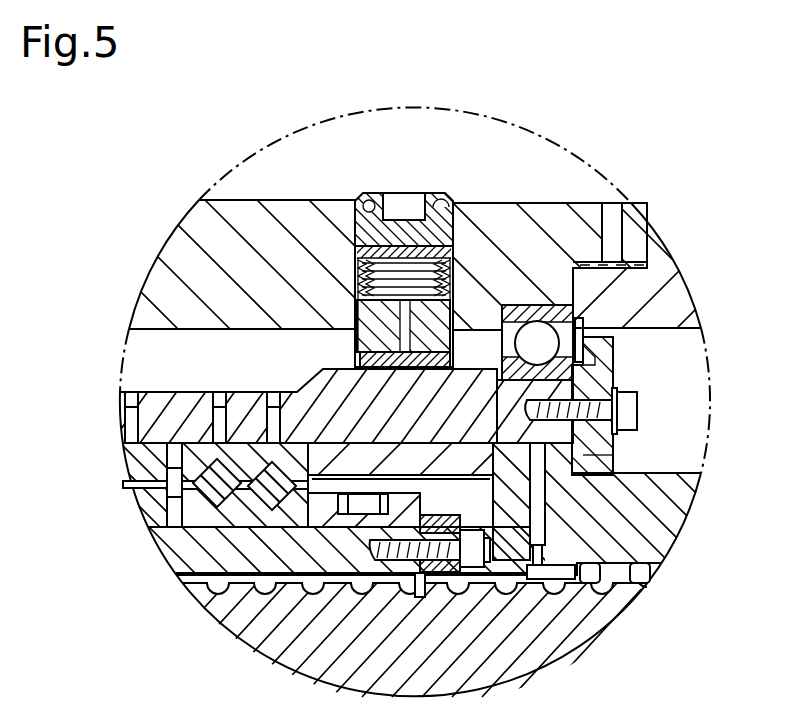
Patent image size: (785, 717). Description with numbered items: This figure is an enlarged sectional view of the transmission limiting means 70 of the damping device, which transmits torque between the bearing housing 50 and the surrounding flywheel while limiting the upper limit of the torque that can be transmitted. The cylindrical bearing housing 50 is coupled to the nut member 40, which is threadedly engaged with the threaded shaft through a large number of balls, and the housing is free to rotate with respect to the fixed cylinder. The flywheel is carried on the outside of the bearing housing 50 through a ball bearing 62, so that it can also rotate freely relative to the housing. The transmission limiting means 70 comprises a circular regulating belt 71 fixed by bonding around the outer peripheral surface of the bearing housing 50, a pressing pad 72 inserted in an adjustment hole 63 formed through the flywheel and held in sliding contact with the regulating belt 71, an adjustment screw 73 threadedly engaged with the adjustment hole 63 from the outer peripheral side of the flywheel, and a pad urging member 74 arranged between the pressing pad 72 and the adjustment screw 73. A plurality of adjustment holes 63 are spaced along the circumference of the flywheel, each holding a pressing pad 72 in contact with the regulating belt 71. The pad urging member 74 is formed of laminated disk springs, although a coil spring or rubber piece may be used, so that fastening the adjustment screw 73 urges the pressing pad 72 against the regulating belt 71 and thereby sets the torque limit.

The nut member 40 is at (683, 478).
The bearing housing 50 is at (310, 385).
The ball bearing 62 is at (560, 318).
The adjustment hole 63 is at (362, 195).
The transmission limiting means 70 is at (393, 220).
The regulating belt 71 is at (475, 330).
The pressing pad 72 is at (355, 337).
The adjustment screw 73 is at (437, 195).
The pad urging member 74 is at (458, 260).